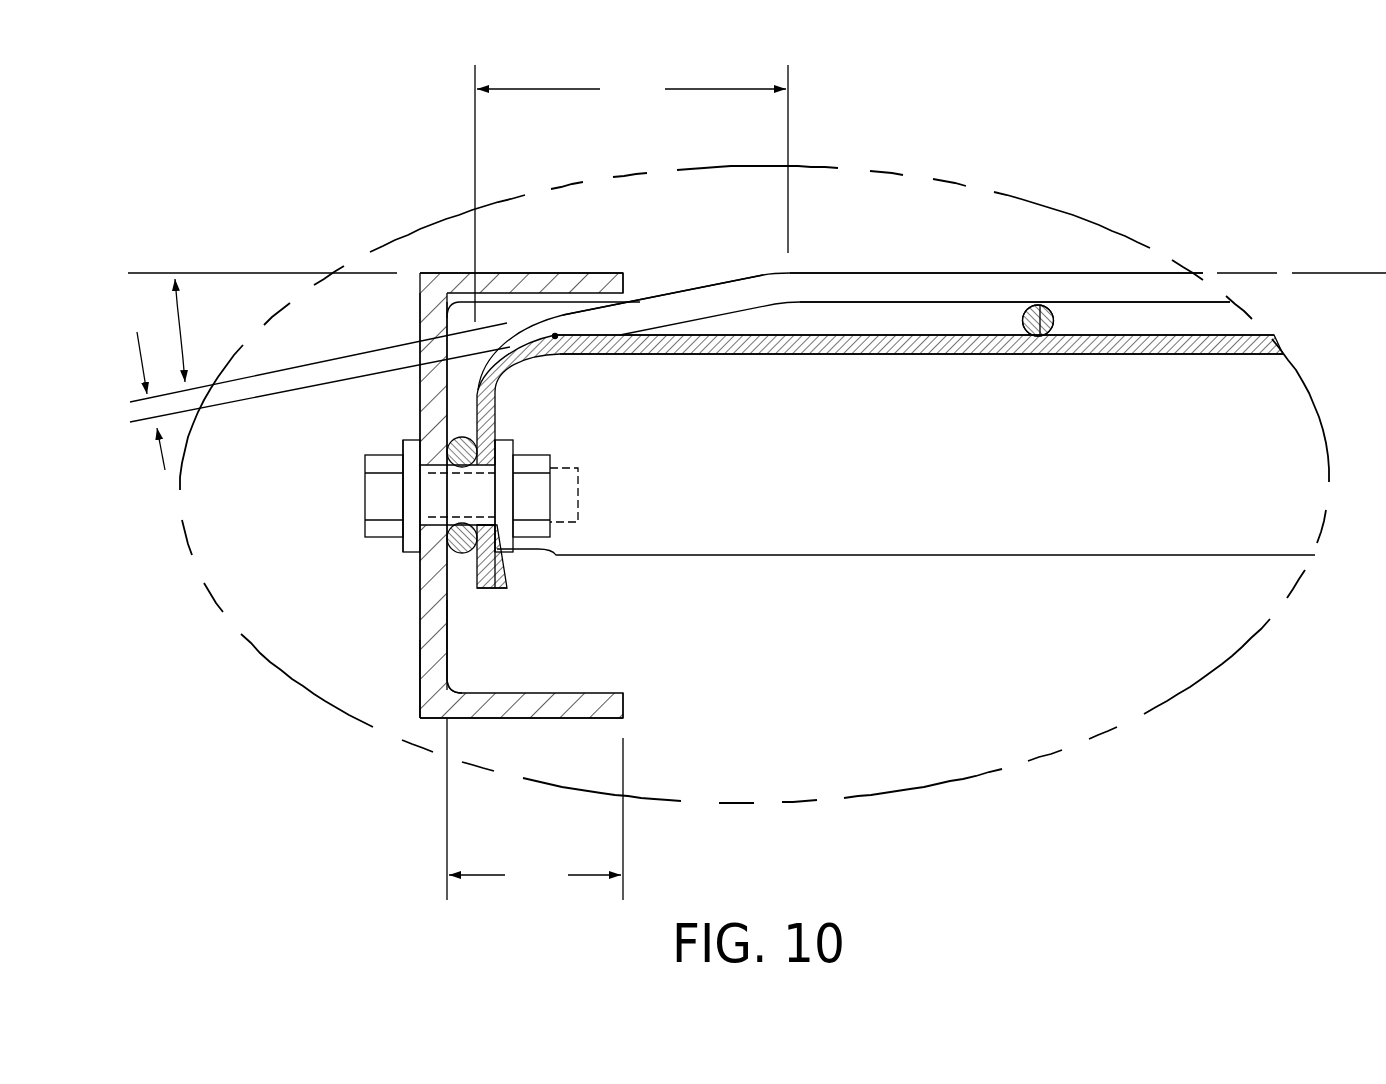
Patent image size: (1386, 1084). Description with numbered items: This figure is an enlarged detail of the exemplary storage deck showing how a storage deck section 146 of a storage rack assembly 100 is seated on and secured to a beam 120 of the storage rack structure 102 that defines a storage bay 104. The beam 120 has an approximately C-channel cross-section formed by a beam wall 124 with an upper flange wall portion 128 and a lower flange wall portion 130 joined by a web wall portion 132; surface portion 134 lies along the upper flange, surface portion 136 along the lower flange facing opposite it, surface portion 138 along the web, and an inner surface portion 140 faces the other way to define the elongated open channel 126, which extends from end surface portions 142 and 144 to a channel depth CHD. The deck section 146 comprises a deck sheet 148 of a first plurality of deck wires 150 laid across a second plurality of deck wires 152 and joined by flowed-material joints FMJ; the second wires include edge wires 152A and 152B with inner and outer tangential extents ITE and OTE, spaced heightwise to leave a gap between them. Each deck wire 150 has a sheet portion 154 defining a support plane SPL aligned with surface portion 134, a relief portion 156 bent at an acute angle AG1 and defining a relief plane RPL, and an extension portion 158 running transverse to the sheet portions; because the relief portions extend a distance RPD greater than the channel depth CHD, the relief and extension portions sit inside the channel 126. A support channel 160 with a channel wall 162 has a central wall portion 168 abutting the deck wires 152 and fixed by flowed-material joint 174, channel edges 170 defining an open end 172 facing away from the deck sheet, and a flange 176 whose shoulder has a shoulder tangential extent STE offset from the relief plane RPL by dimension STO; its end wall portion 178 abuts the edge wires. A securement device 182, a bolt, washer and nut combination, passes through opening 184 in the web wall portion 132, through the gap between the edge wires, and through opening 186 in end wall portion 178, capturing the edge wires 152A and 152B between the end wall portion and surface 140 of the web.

The storage rack assembly 100 is at (967, 125).
The storage rack structure 102 is at (985, 160).
The storage bay 104 is at (1320, 130).
The beam 120 is at (480, 476).
The beam wall 124 is at (420, 680).
The elongated open channel 126 is at (608, 638).
The flange wall portion 128 is at (557, 283).
The flange wall portion 130 is at (540, 712).
The web wall portion 132 is at (438, 641).
The surface portion 134 is at (597, 283).
The surface portion 136 is at (592, 720).
The surface portion 138 is at (420, 708).
The surface portion 140 is at (447, 658).
The end surface portion 142 is at (623, 290).
The end surface portion 144 is at (623, 716).
The storage deck section 146 is at (864, 259).
The deck sheet 148 is at (890, 267).
The first plurality of deck wires 150 is at (1155, 271).
The second plurality of deck wires 152 is at (1025, 313).
The edge wire 152A is at (498, 415).
The edge wire 152B is at (450, 540).
The sheet portion 154 is at (860, 283).
The relief portion 156 is at (703, 298).
The extension portion 158 is at (421, 397).
The support channel 160 is at (1116, 333).
The channel wall 162 is at (1228, 355).
The central wall portion 168 is at (1146, 350).
The channel edge 170 is at (1025, 556).
The open end 172 is at (1143, 514).
The flowed-material joint 174 is at (1040, 337).
The flange 176 is at (548, 574).
The end wall portion 178 is at (488, 590).
The securement device 182 is at (488, 496).
The opening 184 is at (428, 467).
The opening 186 is at (552, 528).
The outer tangential extent OTE is at (415, 444).
The inner tangential extent ITE is at (495, 440).
The shoulder tangential extent STE is at (555, 334).
The flowed-material joint FMJ is at (1040, 305).
The support plane SPL is at (1298, 273).
The relief plane RPL is at (272, 370).
The acute angle AG1 is at (180, 320).
The shoulder offset dimension STO is at (165, 470).
The relief portion distance RPD is at (631, 193).
The channel depth CHD is at (535, 809).